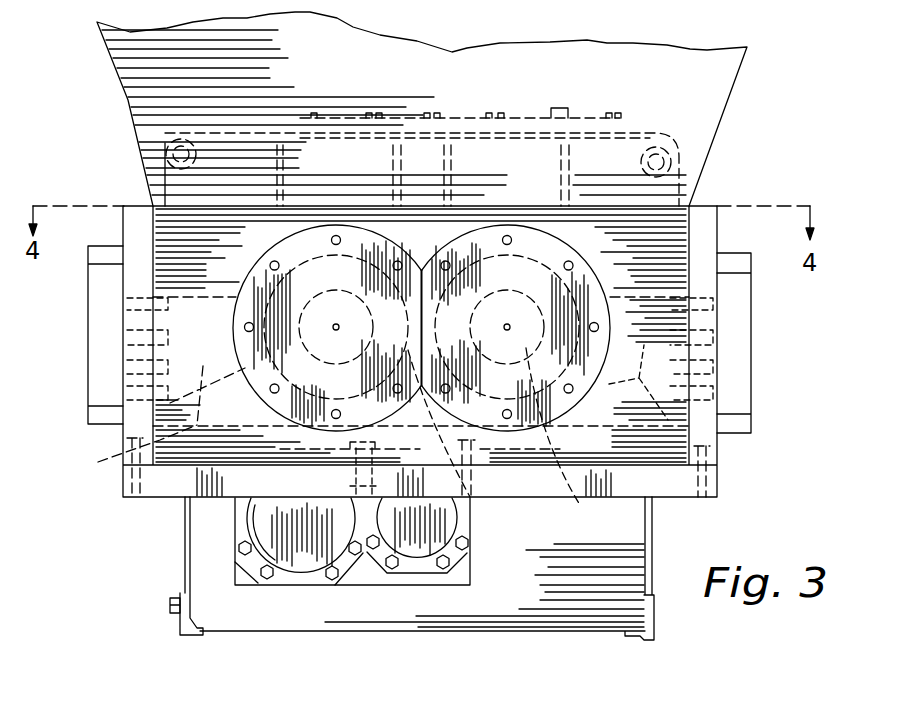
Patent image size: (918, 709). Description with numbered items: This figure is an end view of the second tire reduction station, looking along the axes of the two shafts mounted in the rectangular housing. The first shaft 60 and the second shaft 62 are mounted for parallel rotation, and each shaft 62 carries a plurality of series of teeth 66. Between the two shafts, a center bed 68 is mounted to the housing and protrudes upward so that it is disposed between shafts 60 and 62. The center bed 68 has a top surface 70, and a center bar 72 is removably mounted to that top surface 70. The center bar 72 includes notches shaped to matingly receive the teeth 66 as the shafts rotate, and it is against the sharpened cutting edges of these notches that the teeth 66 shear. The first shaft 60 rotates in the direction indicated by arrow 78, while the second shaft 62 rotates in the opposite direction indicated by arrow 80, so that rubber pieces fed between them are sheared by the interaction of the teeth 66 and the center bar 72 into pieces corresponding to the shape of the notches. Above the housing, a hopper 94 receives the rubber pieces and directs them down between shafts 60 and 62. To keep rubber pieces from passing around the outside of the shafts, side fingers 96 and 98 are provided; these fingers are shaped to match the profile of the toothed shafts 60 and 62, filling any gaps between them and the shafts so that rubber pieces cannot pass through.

The first shaft 60 is at (275, 407).
The second shaft 62 is at (566, 500).
The teeth 66 is at (567, 248).
The center bed 68 is at (350, 475).
The top surface 70 is at (488, 514).
The center bar 72 is at (455, 326).
The arrow 78 is at (410, 244).
The arrow 80 is at (434, 244).
The hopper 94 is at (719, 95).
The side finger 96 is at (113, 456).
The side finger 98 is at (639, 378).